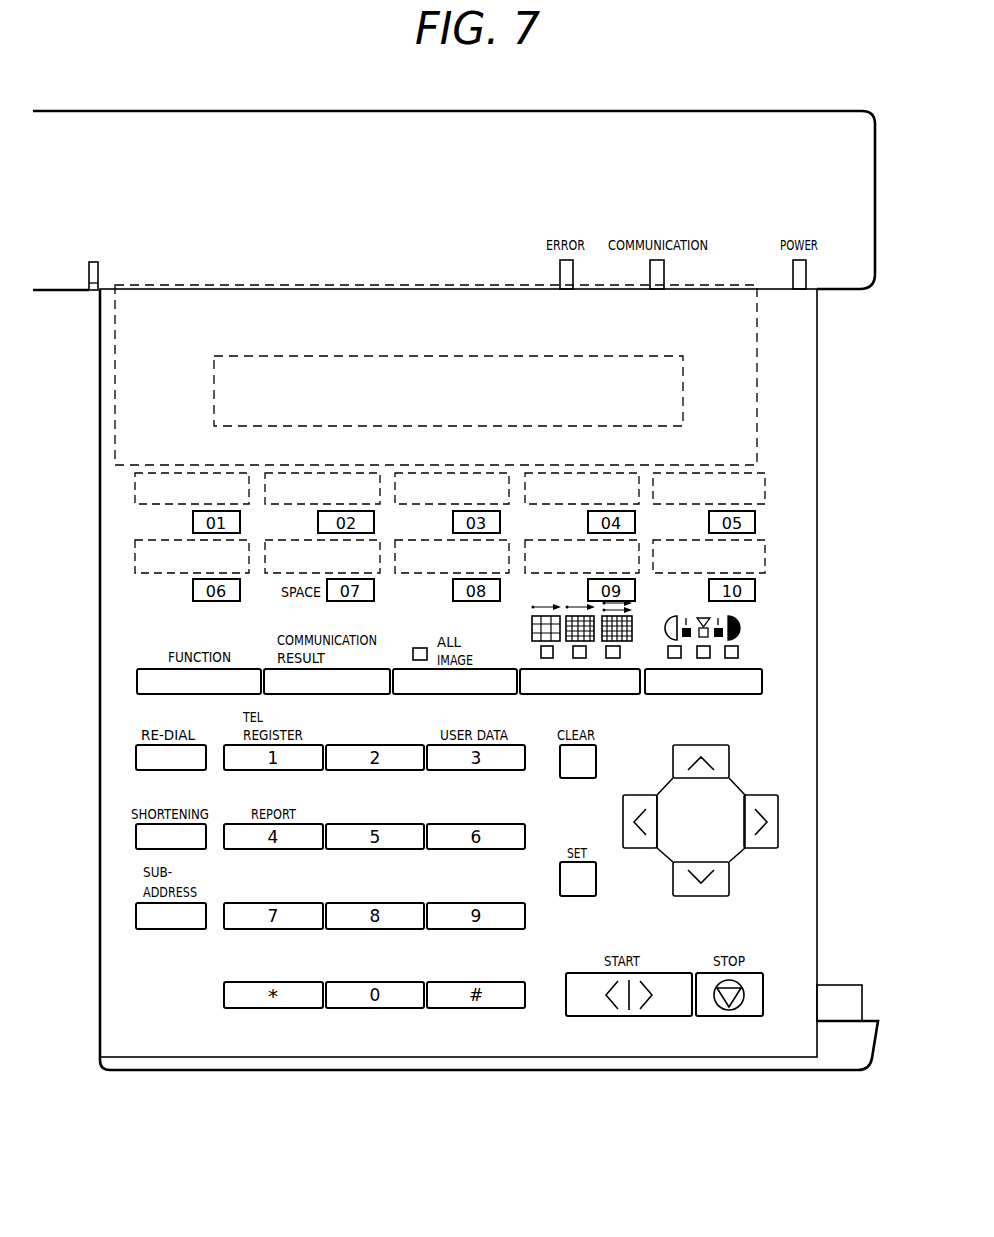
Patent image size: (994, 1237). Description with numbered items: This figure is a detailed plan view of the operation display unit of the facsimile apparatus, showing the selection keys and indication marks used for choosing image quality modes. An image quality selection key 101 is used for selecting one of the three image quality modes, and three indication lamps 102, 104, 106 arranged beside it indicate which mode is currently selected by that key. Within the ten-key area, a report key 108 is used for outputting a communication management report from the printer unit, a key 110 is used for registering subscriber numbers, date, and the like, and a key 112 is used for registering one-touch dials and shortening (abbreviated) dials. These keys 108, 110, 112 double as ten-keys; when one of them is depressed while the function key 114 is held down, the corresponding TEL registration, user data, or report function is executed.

The image quality selection key 101 is at (624, 684).
The indication lamp 102 is at (541, 652).
The indication lamp 104 is at (620, 651).
The indication lamp 106 is at (578, 658).
The report key 108 is at (260, 849).
The key 110 is at (485, 770).
The key 112 is at (224, 770).
The function key 114 is at (137, 683).